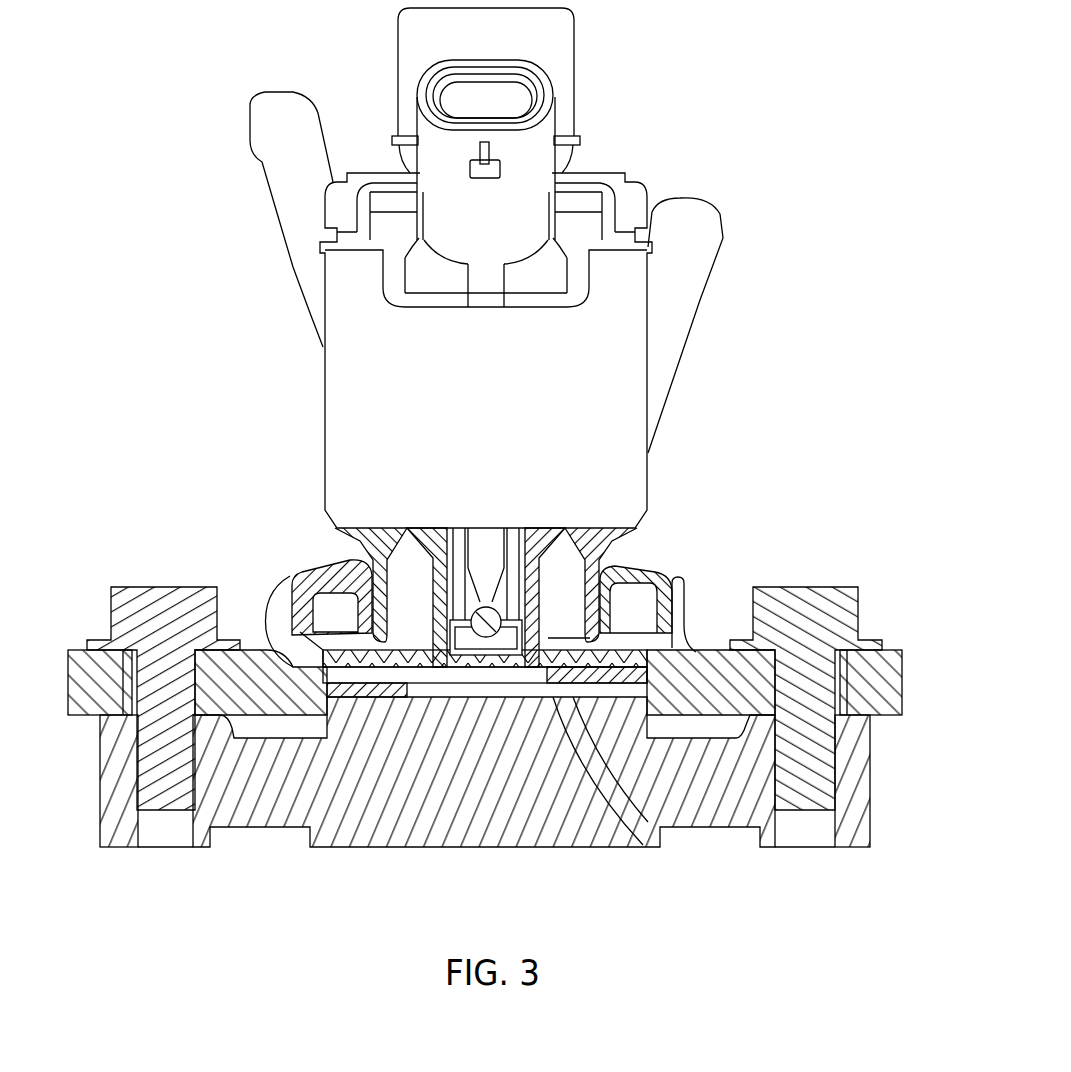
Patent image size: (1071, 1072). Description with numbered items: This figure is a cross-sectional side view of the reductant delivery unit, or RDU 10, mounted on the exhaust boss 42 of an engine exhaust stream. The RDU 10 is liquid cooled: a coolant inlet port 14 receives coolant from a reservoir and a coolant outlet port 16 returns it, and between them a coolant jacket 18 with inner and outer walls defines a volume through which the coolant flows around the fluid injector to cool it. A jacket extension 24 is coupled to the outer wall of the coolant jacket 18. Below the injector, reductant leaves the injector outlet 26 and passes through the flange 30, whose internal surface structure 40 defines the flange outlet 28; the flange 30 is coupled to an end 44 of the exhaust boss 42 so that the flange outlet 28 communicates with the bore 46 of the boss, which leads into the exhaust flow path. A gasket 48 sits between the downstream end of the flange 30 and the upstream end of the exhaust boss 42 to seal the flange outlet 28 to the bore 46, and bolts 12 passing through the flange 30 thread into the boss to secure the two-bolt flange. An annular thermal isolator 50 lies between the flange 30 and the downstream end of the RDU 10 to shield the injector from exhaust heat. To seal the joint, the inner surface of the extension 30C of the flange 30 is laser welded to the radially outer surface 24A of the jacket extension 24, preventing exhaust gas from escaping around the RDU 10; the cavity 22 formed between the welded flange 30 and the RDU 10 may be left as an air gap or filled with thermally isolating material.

The RDU 10 is at (515, 458).
The bolts 12 is at (138, 607).
The coolant inlet port 14 is at (703, 205).
The coolant outlet port 16 is at (295, 92).
The coolant jacket 18 is at (598, 555).
The cavity 22 is at (340, 597).
The jacket extension 24 is at (647, 572).
The radially outer surface 24A is at (348, 653).
The injector outlet 26 is at (470, 660).
The flange outlet 28 is at (503, 684).
The flange 30 is at (893, 663).
The extension 30C is at (685, 598).
The internal surface structure 40 is at (553, 680).
The exhaust boss 42 is at (717, 793).
The end 44 is at (633, 700).
The bore 46 is at (358, 800).
The gasket 48 is at (383, 690).
The thermal isolator 50 is at (362, 662).